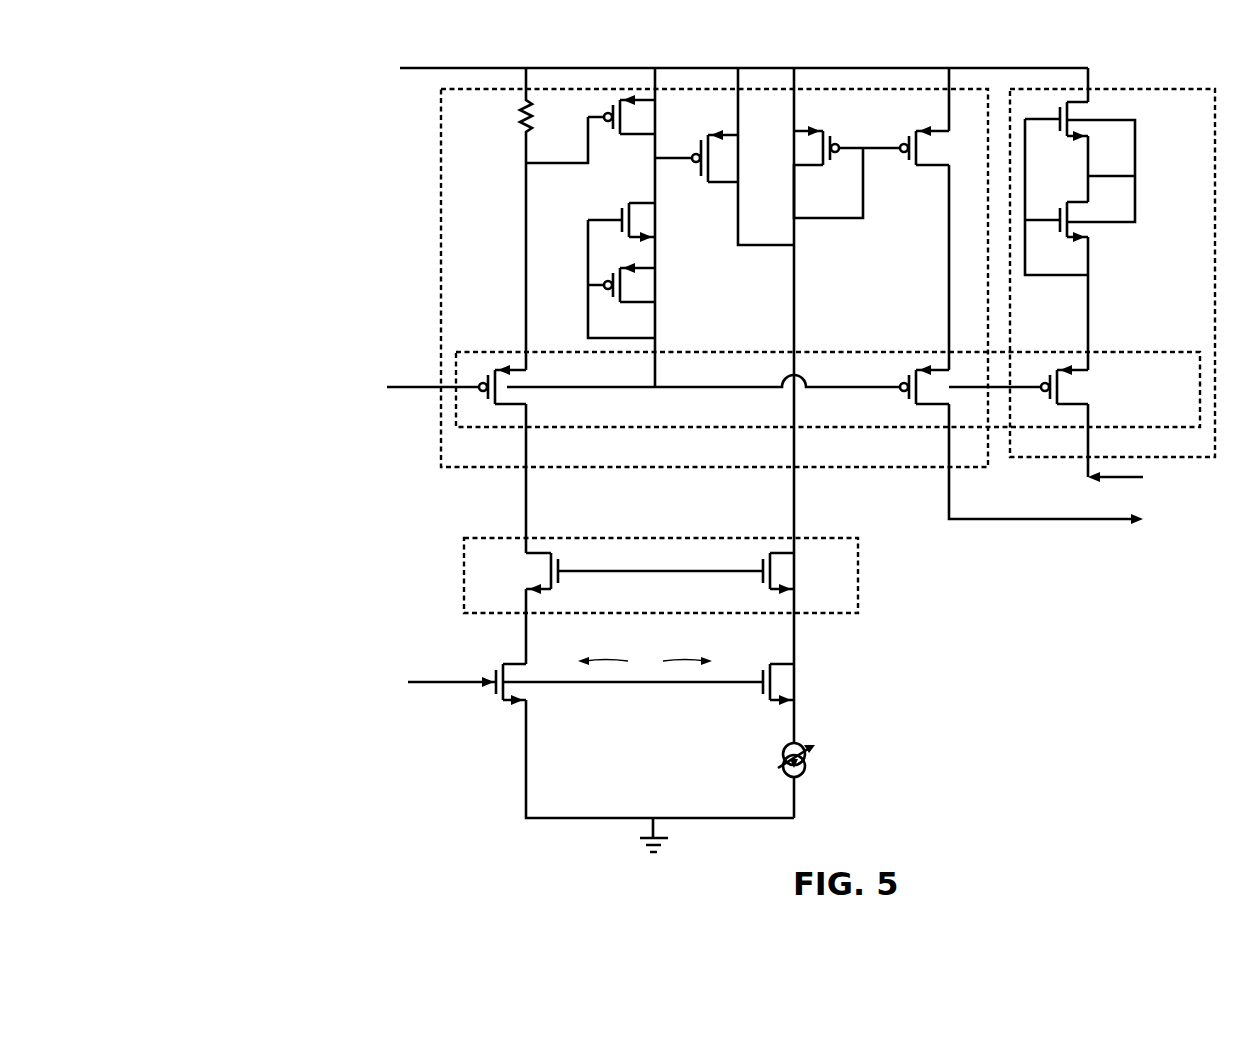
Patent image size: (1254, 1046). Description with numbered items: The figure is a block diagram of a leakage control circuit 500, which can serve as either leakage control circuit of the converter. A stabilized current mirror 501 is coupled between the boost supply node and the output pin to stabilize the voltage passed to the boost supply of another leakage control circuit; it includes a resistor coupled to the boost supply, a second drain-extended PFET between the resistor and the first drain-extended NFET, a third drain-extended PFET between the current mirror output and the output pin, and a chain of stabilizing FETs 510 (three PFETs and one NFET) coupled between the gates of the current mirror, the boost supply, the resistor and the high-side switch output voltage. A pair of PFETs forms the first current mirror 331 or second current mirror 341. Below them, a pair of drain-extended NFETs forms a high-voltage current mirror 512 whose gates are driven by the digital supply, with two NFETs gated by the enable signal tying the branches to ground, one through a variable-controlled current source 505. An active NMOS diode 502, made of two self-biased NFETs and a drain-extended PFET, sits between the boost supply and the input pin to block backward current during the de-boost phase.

The leakage control circuit 500 is at (307, 158).
The stabilized current mirror 501 is at (441, 270).
The active NMOS diode 502 is at (1143, 89).
The variable-controlled current source 505 is at (803, 770).
The chain of stabilizing FETs 510 is at (591, 98).
The high-voltage current mirror 512 is at (858, 572).
The first current mirror 331 is at (882, 127).
The second current mirror 341 is at (870, 118).